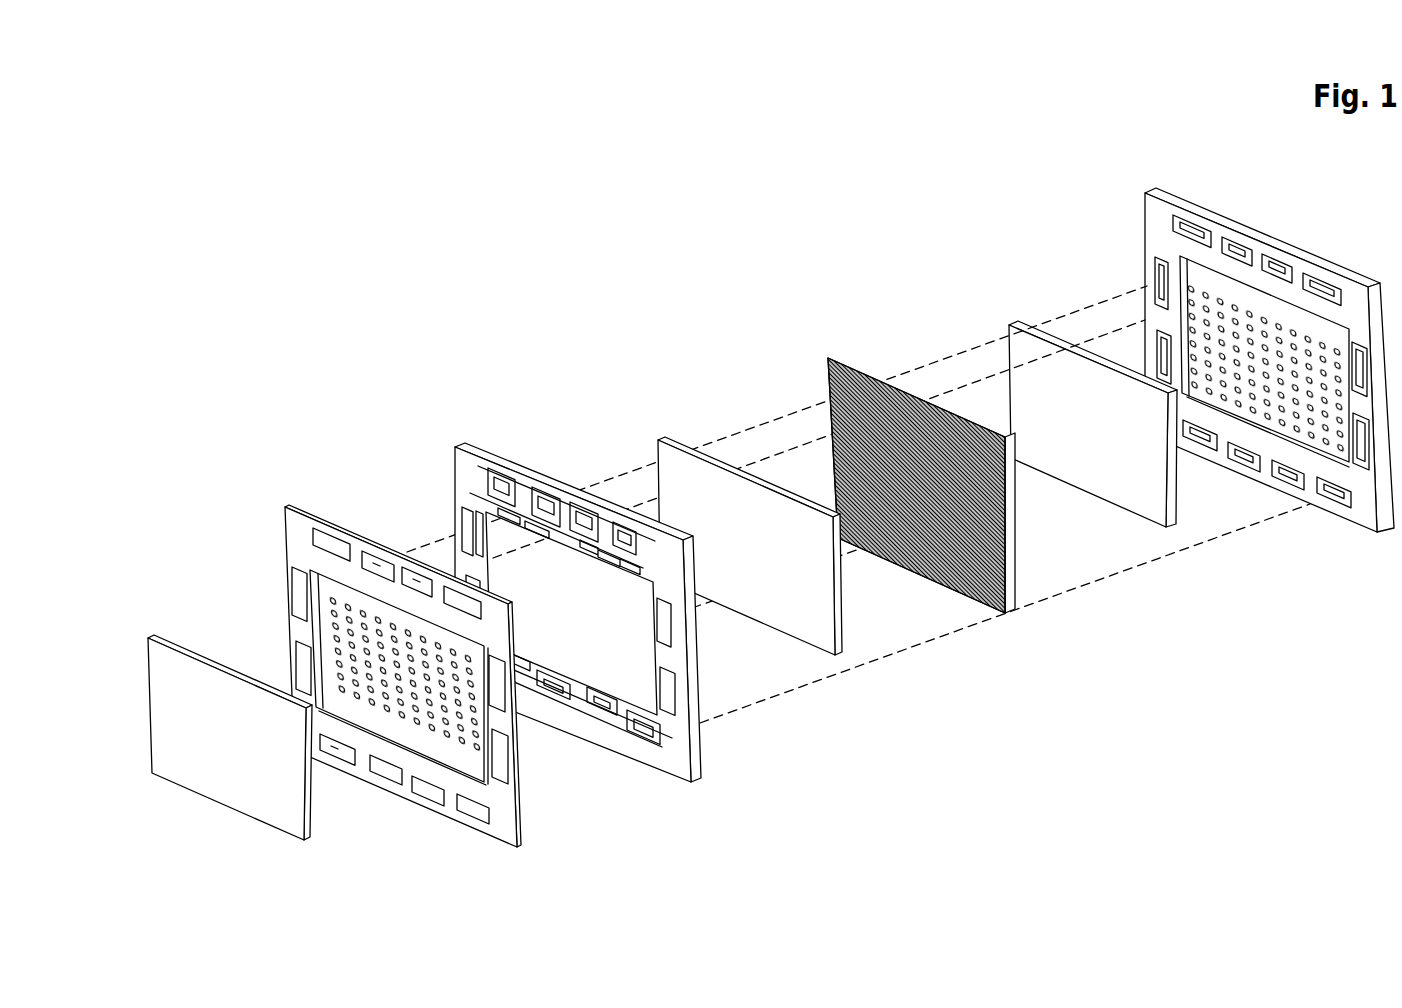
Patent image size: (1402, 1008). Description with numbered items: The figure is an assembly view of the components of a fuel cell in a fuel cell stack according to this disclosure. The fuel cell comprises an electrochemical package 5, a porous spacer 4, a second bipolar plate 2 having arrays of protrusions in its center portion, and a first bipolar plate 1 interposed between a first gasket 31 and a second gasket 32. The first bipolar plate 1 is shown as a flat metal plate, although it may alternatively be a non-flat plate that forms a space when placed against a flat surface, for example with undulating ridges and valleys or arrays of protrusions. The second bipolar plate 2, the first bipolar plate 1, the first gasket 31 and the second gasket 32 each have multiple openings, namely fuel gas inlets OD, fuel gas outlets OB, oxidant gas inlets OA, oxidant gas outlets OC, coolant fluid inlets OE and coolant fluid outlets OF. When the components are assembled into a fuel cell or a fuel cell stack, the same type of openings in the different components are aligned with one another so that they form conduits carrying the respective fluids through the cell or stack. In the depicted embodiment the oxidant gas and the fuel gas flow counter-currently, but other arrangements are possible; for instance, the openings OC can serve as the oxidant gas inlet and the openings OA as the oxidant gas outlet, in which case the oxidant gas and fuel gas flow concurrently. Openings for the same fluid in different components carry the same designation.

The first bipolar plate 1 is at (571, 555).
The second bipolar plate 2 is at (1158, 225).
The porous spacer 4 is at (1037, 383).
The electrochemical package 5 is at (840, 372).
The first gasket 31 is at (456, 448).
The second gasket 32 is at (490, 445).
The oxidant gas inlets OA is at (341, 754).
The fuel gas outlets OB is at (426, 786).
The oxidant gas outlet OC is at (331, 536).
The fuel gas inlets OD is at (418, 570).
The coolant fluid inlets OE is at (306, 666).
The coolant fluid outlets OF is at (302, 596).